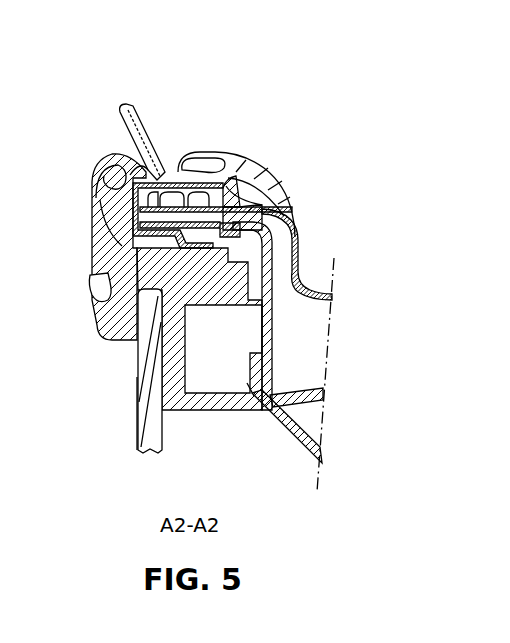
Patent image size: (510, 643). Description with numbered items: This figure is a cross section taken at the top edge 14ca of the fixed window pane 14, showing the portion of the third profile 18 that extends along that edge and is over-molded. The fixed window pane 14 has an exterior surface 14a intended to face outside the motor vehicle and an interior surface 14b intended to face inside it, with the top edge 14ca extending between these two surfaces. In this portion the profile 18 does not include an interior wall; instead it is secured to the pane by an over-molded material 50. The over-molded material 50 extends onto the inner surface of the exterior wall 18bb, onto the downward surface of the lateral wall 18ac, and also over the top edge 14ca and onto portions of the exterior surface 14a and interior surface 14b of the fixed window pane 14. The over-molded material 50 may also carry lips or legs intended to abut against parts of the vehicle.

The fixed window pane 14 is at (180, 342).
The exterior surface 14a is at (130, 353).
The interior surface 14b is at (170, 343).
The top edge 14ca is at (97, 302).
The third profile 18 is at (242, 187).
The lateral wall 18ac is at (208, 262).
The exterior wall 18bb is at (115, 272).
The over-molded material 50 is at (268, 266).